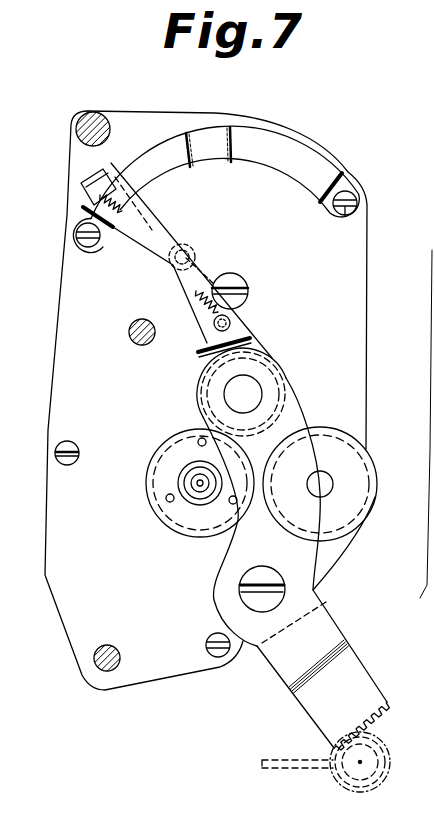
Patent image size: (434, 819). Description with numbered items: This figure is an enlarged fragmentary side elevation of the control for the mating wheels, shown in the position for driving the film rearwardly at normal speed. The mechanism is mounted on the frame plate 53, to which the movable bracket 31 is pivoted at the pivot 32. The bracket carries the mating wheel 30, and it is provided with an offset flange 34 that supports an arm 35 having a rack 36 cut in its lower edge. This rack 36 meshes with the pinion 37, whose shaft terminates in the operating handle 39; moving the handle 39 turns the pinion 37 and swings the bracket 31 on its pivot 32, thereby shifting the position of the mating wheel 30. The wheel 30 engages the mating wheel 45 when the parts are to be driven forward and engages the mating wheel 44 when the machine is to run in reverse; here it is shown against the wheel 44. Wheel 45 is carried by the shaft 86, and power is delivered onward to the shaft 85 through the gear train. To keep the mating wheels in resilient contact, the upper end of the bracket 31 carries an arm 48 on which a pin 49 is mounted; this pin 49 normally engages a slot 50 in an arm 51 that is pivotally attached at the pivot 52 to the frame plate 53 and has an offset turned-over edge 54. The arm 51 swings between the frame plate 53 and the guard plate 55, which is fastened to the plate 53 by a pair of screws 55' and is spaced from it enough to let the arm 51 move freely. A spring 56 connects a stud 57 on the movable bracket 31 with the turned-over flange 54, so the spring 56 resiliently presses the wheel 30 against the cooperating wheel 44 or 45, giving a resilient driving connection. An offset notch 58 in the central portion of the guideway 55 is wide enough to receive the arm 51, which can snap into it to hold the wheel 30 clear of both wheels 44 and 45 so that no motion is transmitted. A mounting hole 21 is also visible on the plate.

The mounting hole 21 is at (112, 650).
The mating wheel 30 is at (200, 387).
The movable bracket 31 is at (278, 552).
The pivot 32 is at (250, 585).
The offset flange 34 is at (343, 648).
The arm 35 is at (367, 681).
The rack 36 is at (388, 713).
The pinion 37 is at (376, 733).
The operating handle 39 is at (280, 757).
The mating wheel 44 is at (160, 445).
The mating wheel 45 is at (325, 428).
The arm 48 is at (244, 330).
The pin 49 is at (187, 250).
The slot 50 is at (212, 270).
The arm 51 is at (157, 222).
The pivot 52 is at (241, 283).
The frame plate 53 is at (238, 400).
The offset turned-over edge 54 is at (85, 193).
The guard plate 55 is at (216, 178).
The screws 55' is at (192, 229).
The spring 56 is at (193, 297).
The stud 57 is at (205, 339).
The offset notch 58 is at (211, 135).
The shaft 85 is at (130, 337).
The shaft 86 is at (325, 478).